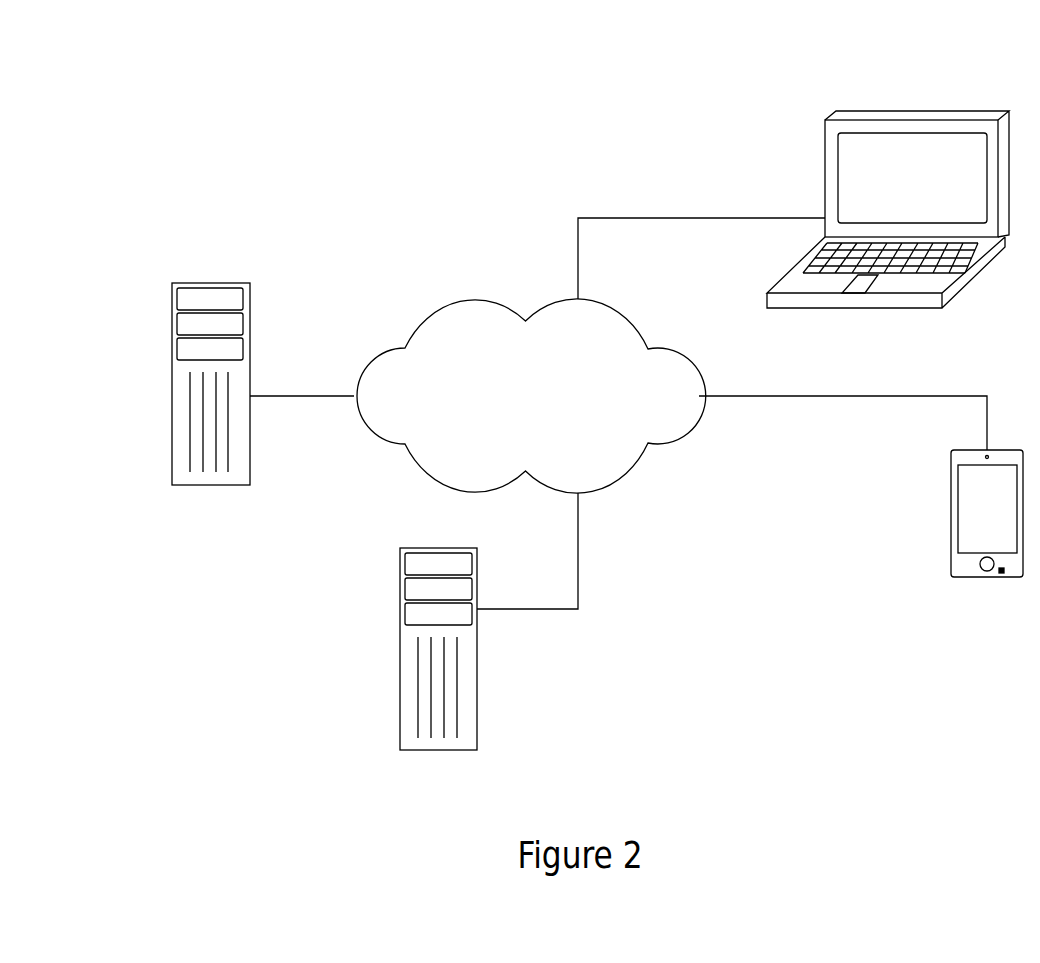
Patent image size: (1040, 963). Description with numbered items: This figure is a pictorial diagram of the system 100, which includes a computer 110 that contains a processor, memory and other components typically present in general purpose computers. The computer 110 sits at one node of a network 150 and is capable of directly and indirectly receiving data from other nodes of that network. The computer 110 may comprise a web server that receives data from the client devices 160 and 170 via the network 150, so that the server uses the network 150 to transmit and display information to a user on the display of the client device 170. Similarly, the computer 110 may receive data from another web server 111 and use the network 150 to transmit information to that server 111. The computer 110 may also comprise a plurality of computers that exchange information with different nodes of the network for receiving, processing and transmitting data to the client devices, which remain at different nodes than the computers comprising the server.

The system 100 is at (390, 82).
The computer 110 is at (172, 296).
The web server 111 is at (400, 563).
The network 150 is at (477, 300).
The client device 160 is at (951, 472).
The client device 170 is at (825, 152).